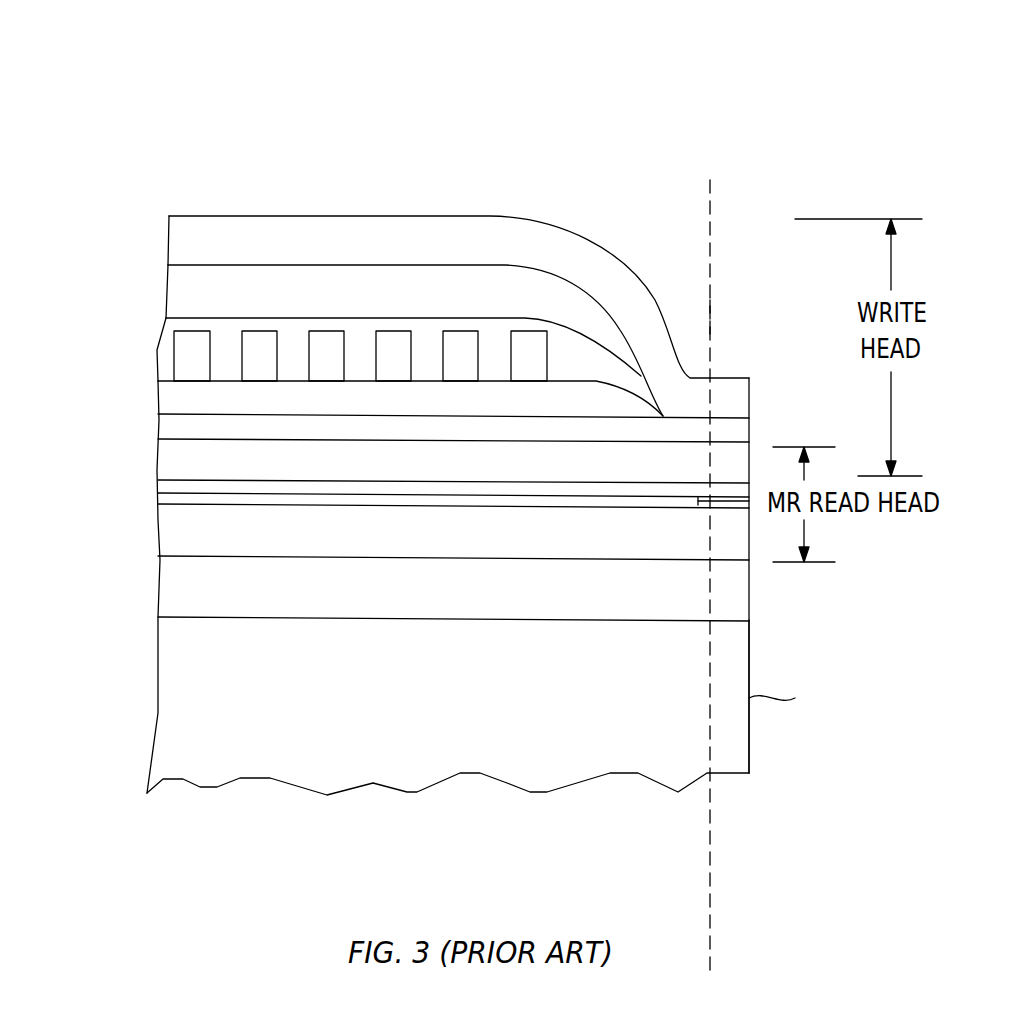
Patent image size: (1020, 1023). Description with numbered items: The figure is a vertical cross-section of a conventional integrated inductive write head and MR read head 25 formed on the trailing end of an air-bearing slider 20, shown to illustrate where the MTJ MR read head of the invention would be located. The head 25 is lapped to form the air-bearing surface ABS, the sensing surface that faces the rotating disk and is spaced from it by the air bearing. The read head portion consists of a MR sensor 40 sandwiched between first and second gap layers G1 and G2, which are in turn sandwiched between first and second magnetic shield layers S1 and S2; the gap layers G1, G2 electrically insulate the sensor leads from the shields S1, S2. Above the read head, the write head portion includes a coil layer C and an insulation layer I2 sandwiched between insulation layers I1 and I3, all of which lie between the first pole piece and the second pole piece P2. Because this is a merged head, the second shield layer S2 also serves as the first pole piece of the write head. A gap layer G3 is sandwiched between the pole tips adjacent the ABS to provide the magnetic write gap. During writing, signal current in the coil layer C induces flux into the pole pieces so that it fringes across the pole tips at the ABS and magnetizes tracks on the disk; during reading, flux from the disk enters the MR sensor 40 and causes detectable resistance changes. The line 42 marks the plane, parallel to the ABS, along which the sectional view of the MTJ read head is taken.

The integrated read/write head 25 is at (399, 403).
The section line 42 is at (711, 318).
The MR sensor 40 is at (700, 500).
The air-bearing slider 20 is at (190, 727).
The first gap layer G1 is at (157, 498).
The second gap layer G2 is at (158, 487).
The gap layer G3 is at (160, 432).
The second pole piece P2 is at (458, 297).
The third insulation layer I3 is at (414, 340).
The second insulation layer I2 is at (399, 349).
The first insulation layer I1 is at (453, 399).
The coil layer C is at (360, 356).
The second magnetic shield layer S2 is at (453, 465).
The first magnetic shield layer S1 is at (453, 539).
The air-bearing surface ABS is at (802, 696).